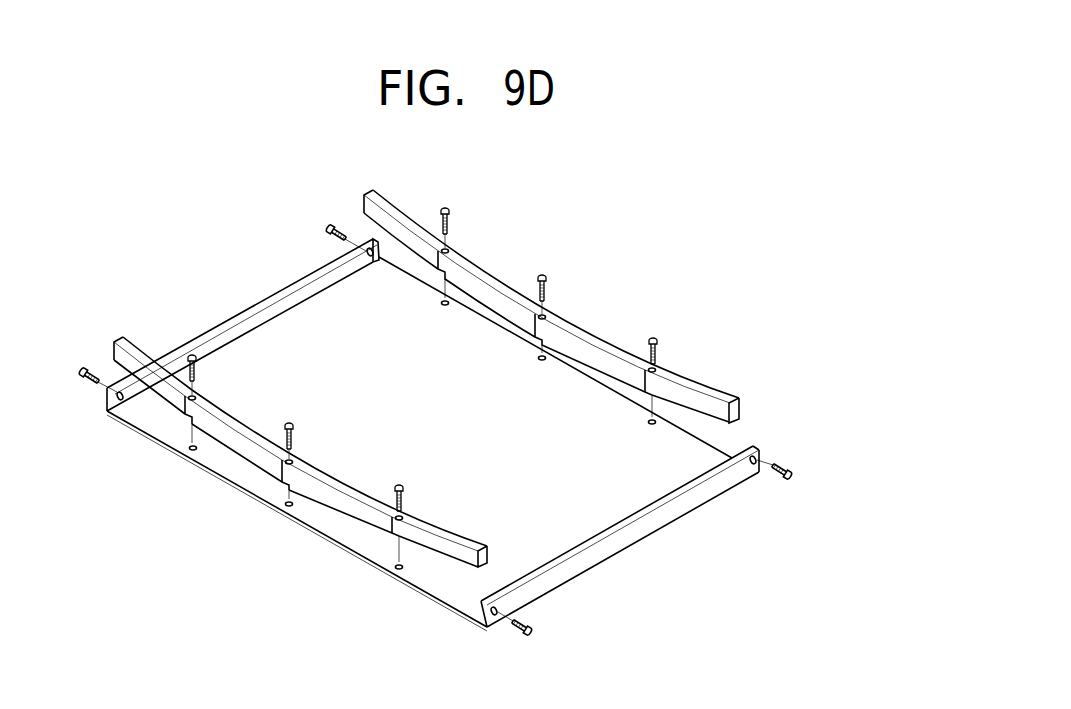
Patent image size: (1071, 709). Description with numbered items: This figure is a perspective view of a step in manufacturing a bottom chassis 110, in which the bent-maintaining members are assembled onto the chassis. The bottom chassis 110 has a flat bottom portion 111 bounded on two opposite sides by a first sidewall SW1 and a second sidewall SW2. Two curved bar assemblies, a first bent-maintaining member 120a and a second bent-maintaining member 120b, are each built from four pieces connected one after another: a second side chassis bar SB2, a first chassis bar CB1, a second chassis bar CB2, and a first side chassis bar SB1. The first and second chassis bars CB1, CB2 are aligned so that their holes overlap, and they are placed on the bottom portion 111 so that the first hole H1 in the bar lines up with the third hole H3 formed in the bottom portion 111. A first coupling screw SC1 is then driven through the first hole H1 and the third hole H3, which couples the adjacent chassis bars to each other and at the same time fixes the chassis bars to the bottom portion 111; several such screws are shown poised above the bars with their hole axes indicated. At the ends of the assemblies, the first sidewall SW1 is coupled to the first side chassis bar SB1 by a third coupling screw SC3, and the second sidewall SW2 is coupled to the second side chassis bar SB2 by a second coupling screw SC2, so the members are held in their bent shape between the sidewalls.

The frame 110 is at (452, 449).
The bottom portion 111 is at (598, 509).
The first bent-maintaining member 120a is at (553, 306).
The second bent-maintaining member 120b is at (276, 477).
The first sidewall SW1 is at (587, 566).
The second sidewall SW2 is at (273, 294).
The first side chassis bar SB1 is at (450, 554).
The second side chassis bar SB2 is at (167, 391).
The first chassis bar CB1 is at (247, 449).
The second chassis bar CB2 is at (353, 508).
The first hole H1 is at (545, 314).
The third hole H3 is at (542, 357).
The first coupling screw SC1 is at (446, 204).
The second coupling screw SC2 is at (83, 369).
The third coupling screw SC3 is at (783, 478).